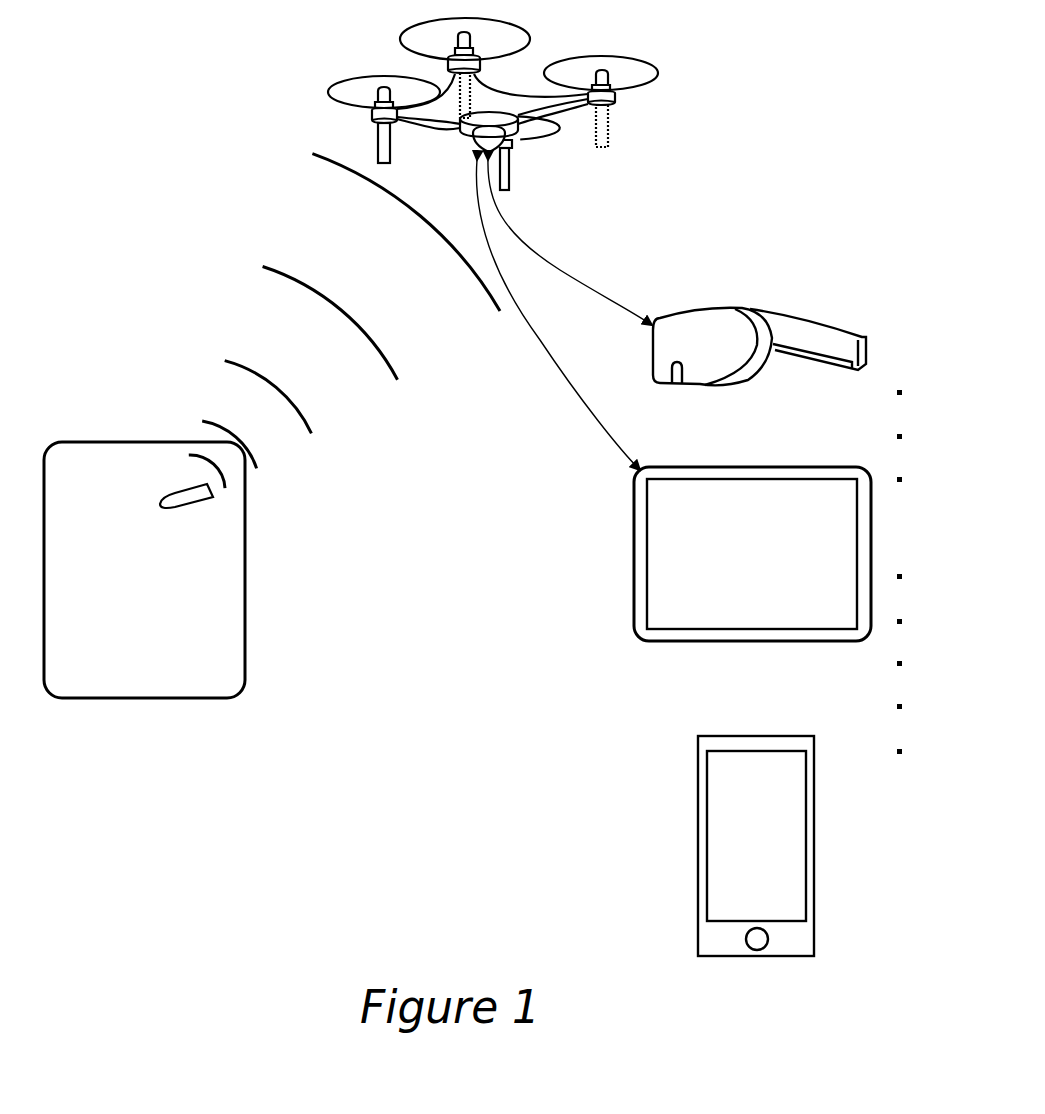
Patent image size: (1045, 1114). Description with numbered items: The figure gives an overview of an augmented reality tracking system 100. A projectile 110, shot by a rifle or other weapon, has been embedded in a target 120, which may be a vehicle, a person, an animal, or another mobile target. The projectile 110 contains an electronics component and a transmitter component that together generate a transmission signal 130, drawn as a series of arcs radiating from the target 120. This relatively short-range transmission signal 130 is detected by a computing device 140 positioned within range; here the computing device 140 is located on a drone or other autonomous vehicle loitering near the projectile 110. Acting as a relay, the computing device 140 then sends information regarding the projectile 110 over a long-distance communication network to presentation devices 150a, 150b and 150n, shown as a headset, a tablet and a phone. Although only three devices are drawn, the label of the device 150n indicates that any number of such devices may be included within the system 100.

The system 100 is at (138, 80).
The projectile 110 is at (213, 497).
The target 120 is at (116, 442).
The transmission signal 130 is at (243, 238).
The computing device 140 is at (348, 45).
The device 150a is at (797, 347).
The device 150b is at (787, 554).
The device 150n is at (819, 846).